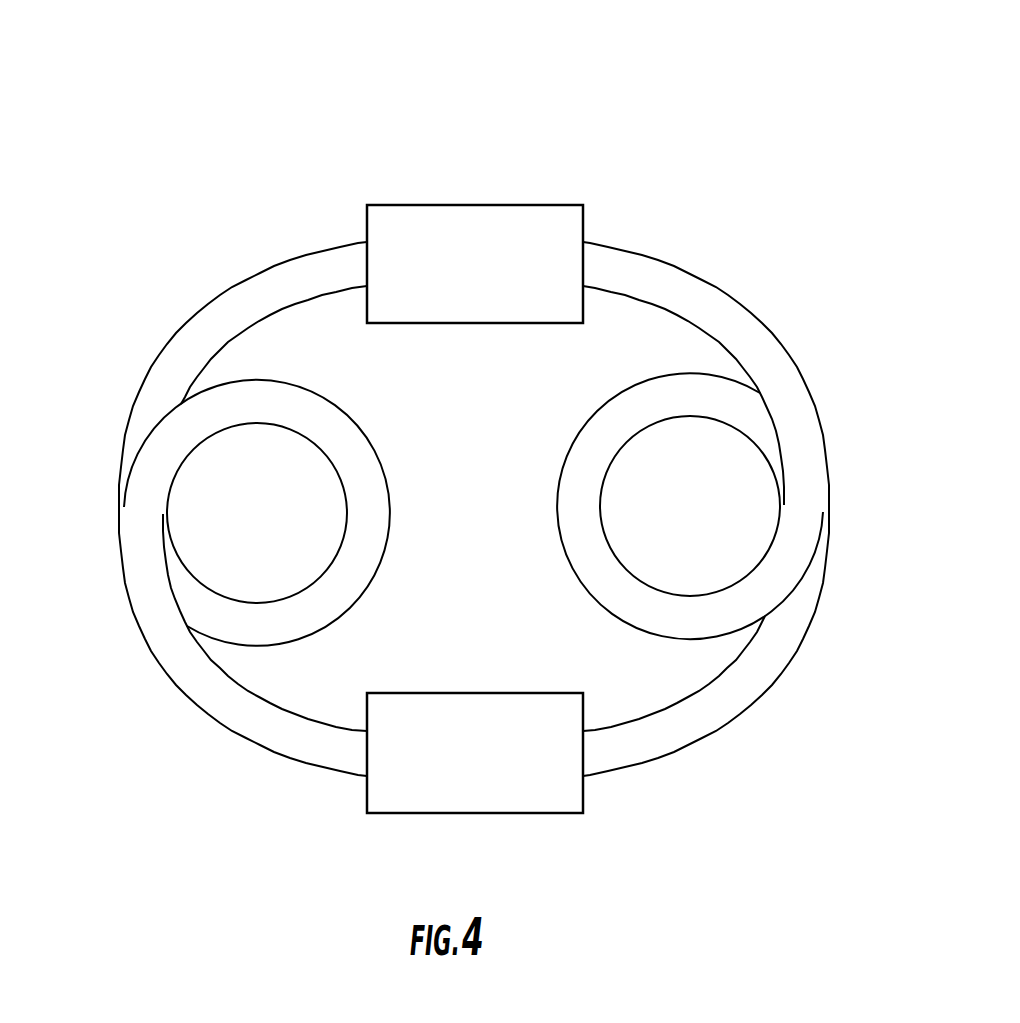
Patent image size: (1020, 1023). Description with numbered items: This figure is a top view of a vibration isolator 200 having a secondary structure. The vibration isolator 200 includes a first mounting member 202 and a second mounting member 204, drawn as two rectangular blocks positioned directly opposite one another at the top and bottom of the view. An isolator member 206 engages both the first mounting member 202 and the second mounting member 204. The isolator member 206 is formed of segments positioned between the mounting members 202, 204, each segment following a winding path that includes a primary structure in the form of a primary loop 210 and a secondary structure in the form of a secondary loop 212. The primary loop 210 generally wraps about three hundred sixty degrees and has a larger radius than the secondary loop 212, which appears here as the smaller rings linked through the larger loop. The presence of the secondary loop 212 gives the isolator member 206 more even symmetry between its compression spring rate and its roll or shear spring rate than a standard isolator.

The vibration isolator 200 is at (567, 96).
The first mounting member 202 is at (533, 227).
The second mounting member 204 is at (535, 777).
The isolator member 206 is at (718, 287).
The primary loop 210 is at (220, 290).
The secondary loop 212 is at (207, 603).